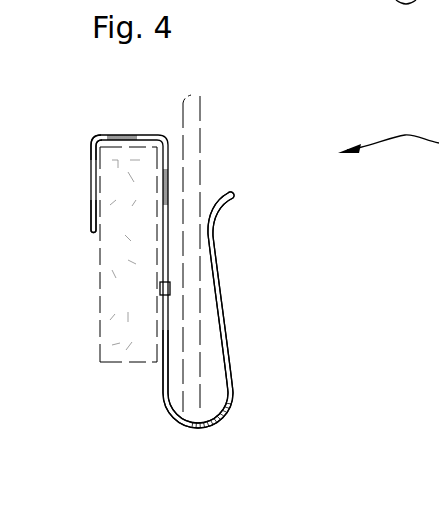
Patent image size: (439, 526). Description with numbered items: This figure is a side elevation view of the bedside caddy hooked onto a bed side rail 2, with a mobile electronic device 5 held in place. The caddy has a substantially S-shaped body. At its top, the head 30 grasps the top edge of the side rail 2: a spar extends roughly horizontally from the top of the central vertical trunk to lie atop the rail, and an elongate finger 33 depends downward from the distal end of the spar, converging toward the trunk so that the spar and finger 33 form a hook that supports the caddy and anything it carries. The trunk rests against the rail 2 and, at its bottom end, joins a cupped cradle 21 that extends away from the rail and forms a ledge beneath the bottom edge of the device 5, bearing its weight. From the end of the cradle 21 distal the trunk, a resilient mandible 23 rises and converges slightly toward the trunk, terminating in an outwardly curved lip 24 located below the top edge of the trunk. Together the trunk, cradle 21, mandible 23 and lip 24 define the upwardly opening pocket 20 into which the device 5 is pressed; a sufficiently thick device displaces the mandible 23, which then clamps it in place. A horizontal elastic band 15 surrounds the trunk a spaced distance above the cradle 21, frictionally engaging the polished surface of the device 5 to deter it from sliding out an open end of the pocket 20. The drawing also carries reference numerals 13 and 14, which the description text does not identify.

The side rail 2 is at (98, 316).
The mobile electronic device 5 is at (185, 128).
The leg of hook 13 is at (165, 357).
The hook strip 14 is at (168, 212).
The elastic band 15 is at (170, 288).
The pocket 20 is at (262, 415).
The cupped cradle 21 is at (195, 426).
The resilient mandible 23 is at (217, 265).
The outwardly curved lip 24 is at (233, 196).
The head 30 is at (92, 162).
The elongate finger 33 is at (92, 222).